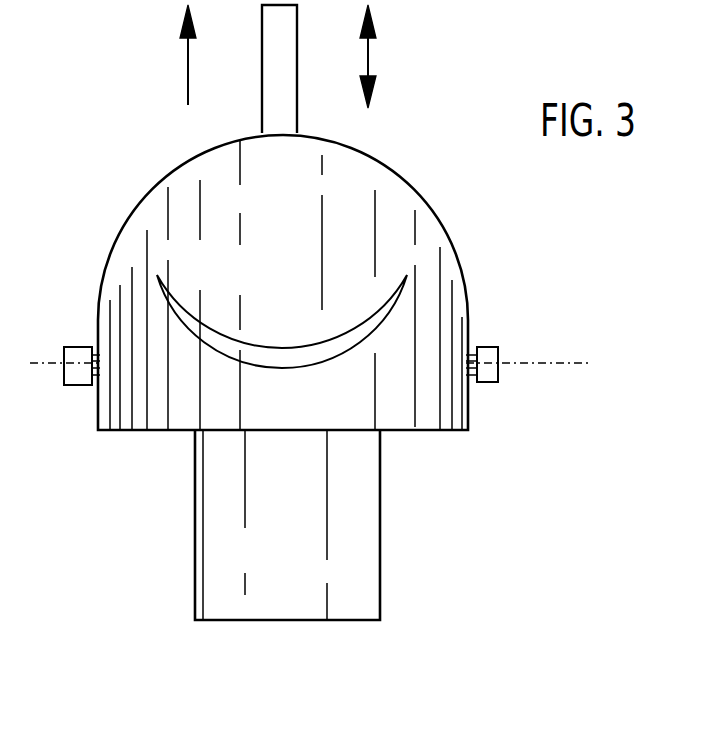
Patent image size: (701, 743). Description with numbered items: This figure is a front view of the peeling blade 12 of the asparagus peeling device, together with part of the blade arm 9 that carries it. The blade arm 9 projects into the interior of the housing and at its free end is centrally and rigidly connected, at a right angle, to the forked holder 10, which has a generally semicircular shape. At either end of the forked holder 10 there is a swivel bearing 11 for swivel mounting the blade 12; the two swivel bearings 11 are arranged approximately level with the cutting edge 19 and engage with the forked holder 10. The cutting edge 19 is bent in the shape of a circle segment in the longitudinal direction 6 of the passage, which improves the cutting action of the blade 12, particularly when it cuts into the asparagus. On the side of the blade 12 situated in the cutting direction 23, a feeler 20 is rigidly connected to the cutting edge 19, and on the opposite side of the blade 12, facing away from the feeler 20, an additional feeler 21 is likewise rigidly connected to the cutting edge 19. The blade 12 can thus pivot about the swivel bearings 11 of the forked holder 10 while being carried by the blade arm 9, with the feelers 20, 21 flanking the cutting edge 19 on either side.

The blade arm 9 is at (274, 38).
The longitudinal direction 6 is at (368, 65).
The cutting direction 23 is at (188, 80).
The feeler 20 is at (158, 217).
The cutting edge 19 is at (273, 368).
The additional feeler 21 is at (368, 565).
The blade 12 is at (157, 453).
The swivel bearing 11 is at (80, 355).
The forked holder 10 is at (77, 385).